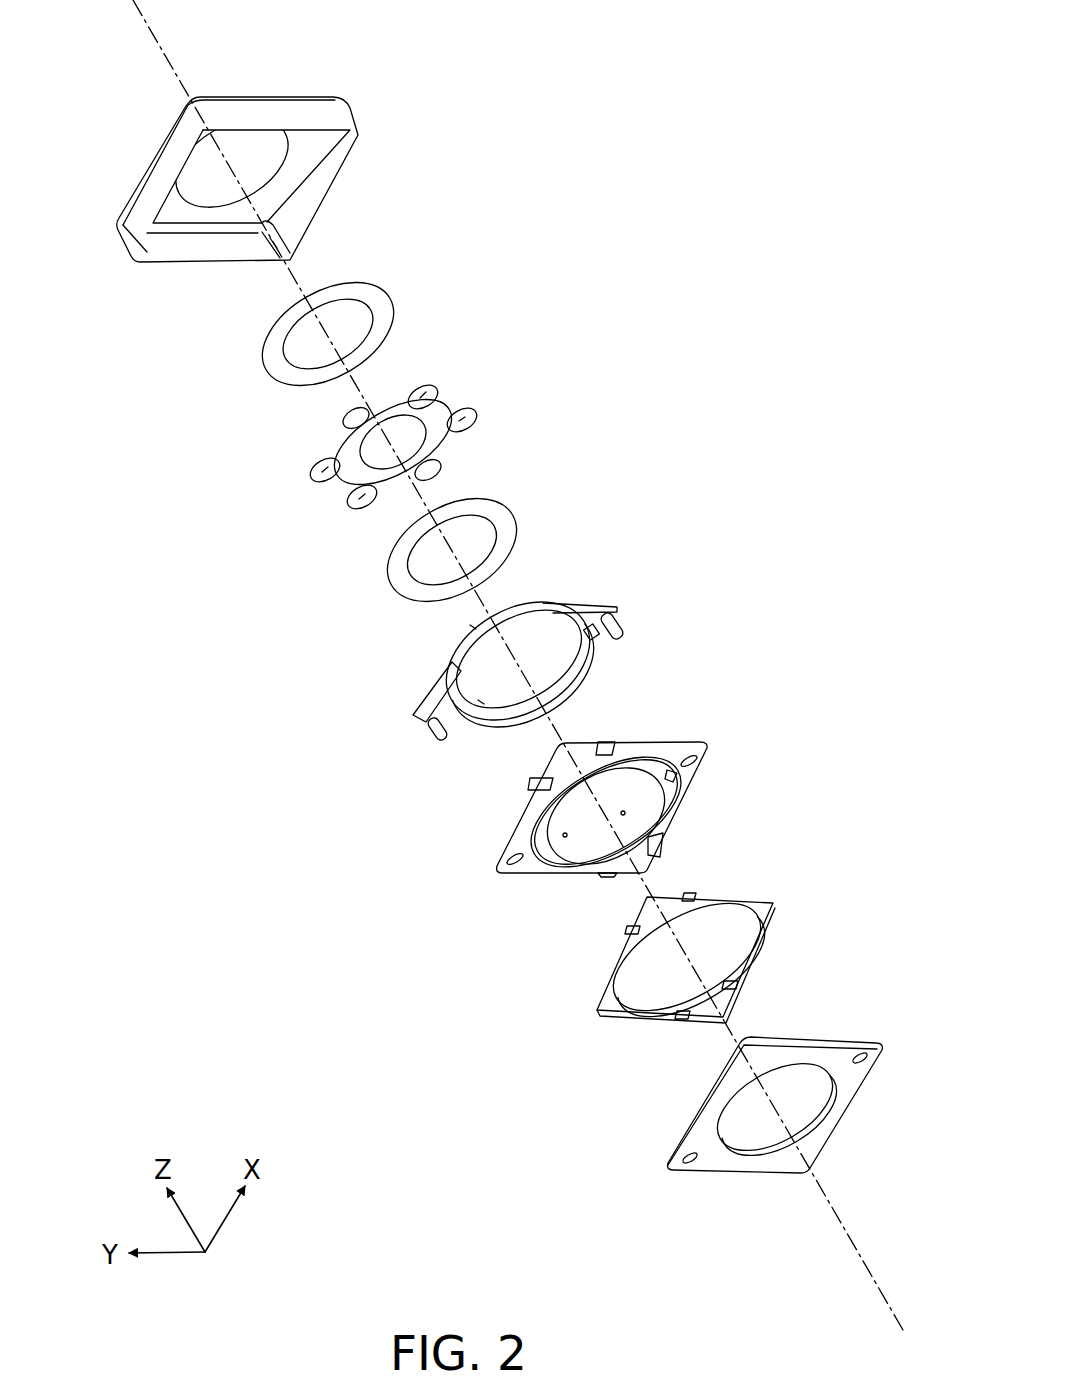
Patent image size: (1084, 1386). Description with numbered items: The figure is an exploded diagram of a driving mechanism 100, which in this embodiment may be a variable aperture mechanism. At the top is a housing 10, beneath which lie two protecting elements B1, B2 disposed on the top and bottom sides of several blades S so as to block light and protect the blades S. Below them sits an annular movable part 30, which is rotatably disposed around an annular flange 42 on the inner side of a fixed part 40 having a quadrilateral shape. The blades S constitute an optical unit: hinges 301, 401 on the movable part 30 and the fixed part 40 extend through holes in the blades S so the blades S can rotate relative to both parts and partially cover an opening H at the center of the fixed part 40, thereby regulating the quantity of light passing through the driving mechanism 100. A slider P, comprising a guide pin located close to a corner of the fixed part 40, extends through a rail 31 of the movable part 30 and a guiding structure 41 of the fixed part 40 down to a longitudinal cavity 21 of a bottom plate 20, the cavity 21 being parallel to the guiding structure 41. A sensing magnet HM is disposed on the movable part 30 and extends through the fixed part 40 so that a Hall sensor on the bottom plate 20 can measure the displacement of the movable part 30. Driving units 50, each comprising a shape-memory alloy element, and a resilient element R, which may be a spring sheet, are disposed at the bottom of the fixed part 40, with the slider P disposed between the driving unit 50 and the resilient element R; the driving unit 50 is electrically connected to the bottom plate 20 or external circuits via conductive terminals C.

The driving mechanism 100 is at (836, 50).
The housing 10 is at (351, 116).
The protecting element B1 is at (382, 304).
The blades S is at (355, 423).
The protecting element B2 is at (507, 523).
The annular movable part 30 is at (519, 667).
The hinge 301 is at (480, 702).
The rail 31 is at (611, 607).
The slider P is at (618, 627).
The sensing magnet HM is at (597, 636).
The fixed part 40 is at (588, 814).
The opening H is at (620, 780).
The guiding structure 41 is at (509, 857).
The annular flange 42 is at (587, 832).
The hinge 401 is at (624, 814).
The driving unit 50 is at (684, 958).
The conductive terminals C is at (692, 896).
The resilient element R is at (726, 1003).
The bottom plate 20 is at (751, 1086).
The longitudinal cavity 21 is at (689, 1156).